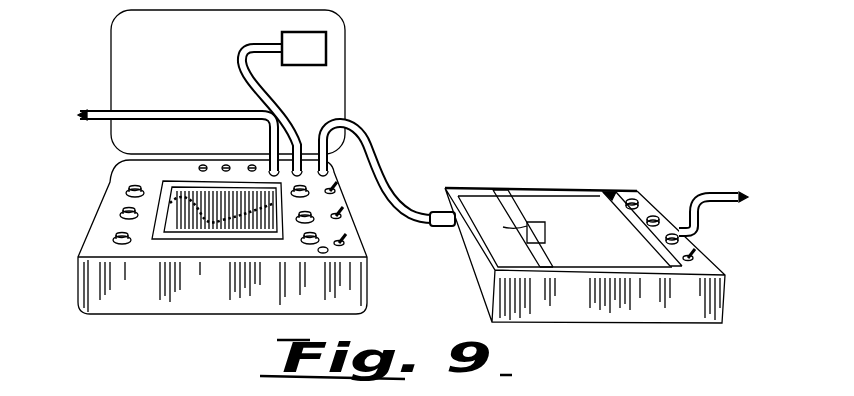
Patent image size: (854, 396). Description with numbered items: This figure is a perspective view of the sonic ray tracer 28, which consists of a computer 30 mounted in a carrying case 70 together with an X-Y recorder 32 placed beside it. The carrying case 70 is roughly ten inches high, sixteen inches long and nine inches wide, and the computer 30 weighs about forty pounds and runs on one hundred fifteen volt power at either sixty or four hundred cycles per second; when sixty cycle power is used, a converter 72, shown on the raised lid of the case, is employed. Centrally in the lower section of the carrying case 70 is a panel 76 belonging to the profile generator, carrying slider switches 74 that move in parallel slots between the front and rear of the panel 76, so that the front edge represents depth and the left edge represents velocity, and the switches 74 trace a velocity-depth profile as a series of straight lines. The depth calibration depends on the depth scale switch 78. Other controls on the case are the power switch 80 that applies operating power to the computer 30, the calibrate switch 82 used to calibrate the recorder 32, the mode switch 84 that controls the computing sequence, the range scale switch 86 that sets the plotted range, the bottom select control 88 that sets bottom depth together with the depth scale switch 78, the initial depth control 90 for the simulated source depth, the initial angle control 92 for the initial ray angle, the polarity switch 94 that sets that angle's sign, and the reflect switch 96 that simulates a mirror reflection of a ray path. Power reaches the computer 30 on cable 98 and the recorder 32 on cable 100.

The sonic ray tracer 28 is at (492, 50).
The computer 30 is at (345, 96).
The X-Y recorder 32 is at (512, 193).
The carrying case 70 is at (105, 180).
The converter 72 is at (328, 44).
The slider switches 74 is at (257, 214).
The panel 76 is at (192, 239).
The depth scale switch 78 is at (118, 218).
The power switch 80 is at (343, 211).
The calibrate switch 82 is at (303, 241).
The mode switch 84 is at (344, 242).
The range scale switch 86 is at (312, 221).
The bottom select control 88 is at (113, 243).
The initial depth control 90 is at (127, 196).
The initial angle control 92 is at (308, 190).
The polarity switch 94 is at (340, 189).
The reflect switch 96 is at (320, 253).
The cable 98 is at (108, 110).
The cable 100 is at (712, 191).